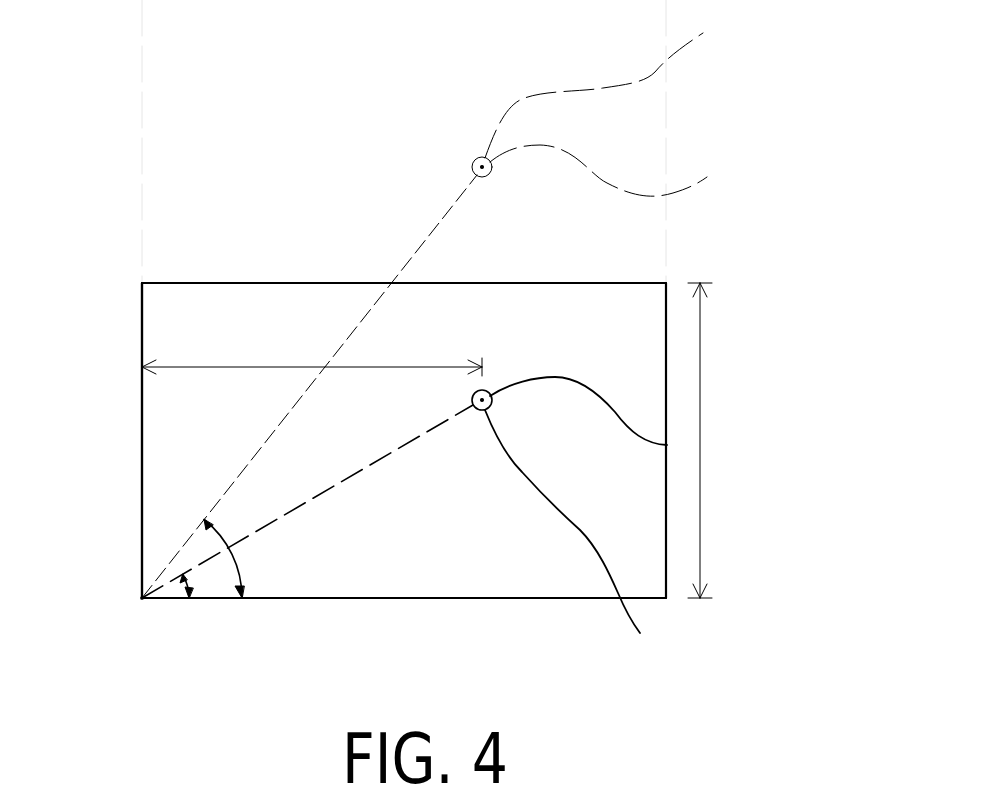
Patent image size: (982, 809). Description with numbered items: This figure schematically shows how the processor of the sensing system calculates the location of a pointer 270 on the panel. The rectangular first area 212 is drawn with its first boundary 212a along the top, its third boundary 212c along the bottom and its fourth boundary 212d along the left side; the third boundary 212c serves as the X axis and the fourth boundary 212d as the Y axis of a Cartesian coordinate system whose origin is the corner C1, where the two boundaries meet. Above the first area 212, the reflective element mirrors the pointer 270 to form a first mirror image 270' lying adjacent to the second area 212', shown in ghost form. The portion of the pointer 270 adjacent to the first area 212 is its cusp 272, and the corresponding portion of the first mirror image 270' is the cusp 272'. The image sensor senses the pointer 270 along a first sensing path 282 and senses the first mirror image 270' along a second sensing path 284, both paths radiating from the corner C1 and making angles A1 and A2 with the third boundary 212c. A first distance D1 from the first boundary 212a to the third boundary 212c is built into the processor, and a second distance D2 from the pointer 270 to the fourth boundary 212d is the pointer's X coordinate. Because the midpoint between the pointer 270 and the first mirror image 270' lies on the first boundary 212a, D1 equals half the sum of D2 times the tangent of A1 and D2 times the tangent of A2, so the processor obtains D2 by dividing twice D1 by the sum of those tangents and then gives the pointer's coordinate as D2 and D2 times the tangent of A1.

The first area 212 is at (498, 440).
The second area 212' is at (350, 141).
The first boundary 212a is at (597, 283).
The third boundary 212c is at (548, 598).
The fourth boundary 212d is at (142, 405).
The pointer 270 is at (641, 411).
The first mirror image 270' is at (627, 167).
The cusp 272 is at (574, 540).
The cusp of the first mirror image 272' is at (615, 79).
The first sensing path 282 is at (328, 492).
The second sensing path 284 is at (237, 477).
The corner C1 is at (142, 598).
The angle A1 is at (192, 592).
The angle A2 is at (240, 570).
The first distance D1 is at (700, 332).
The second distance D2 is at (203, 367).